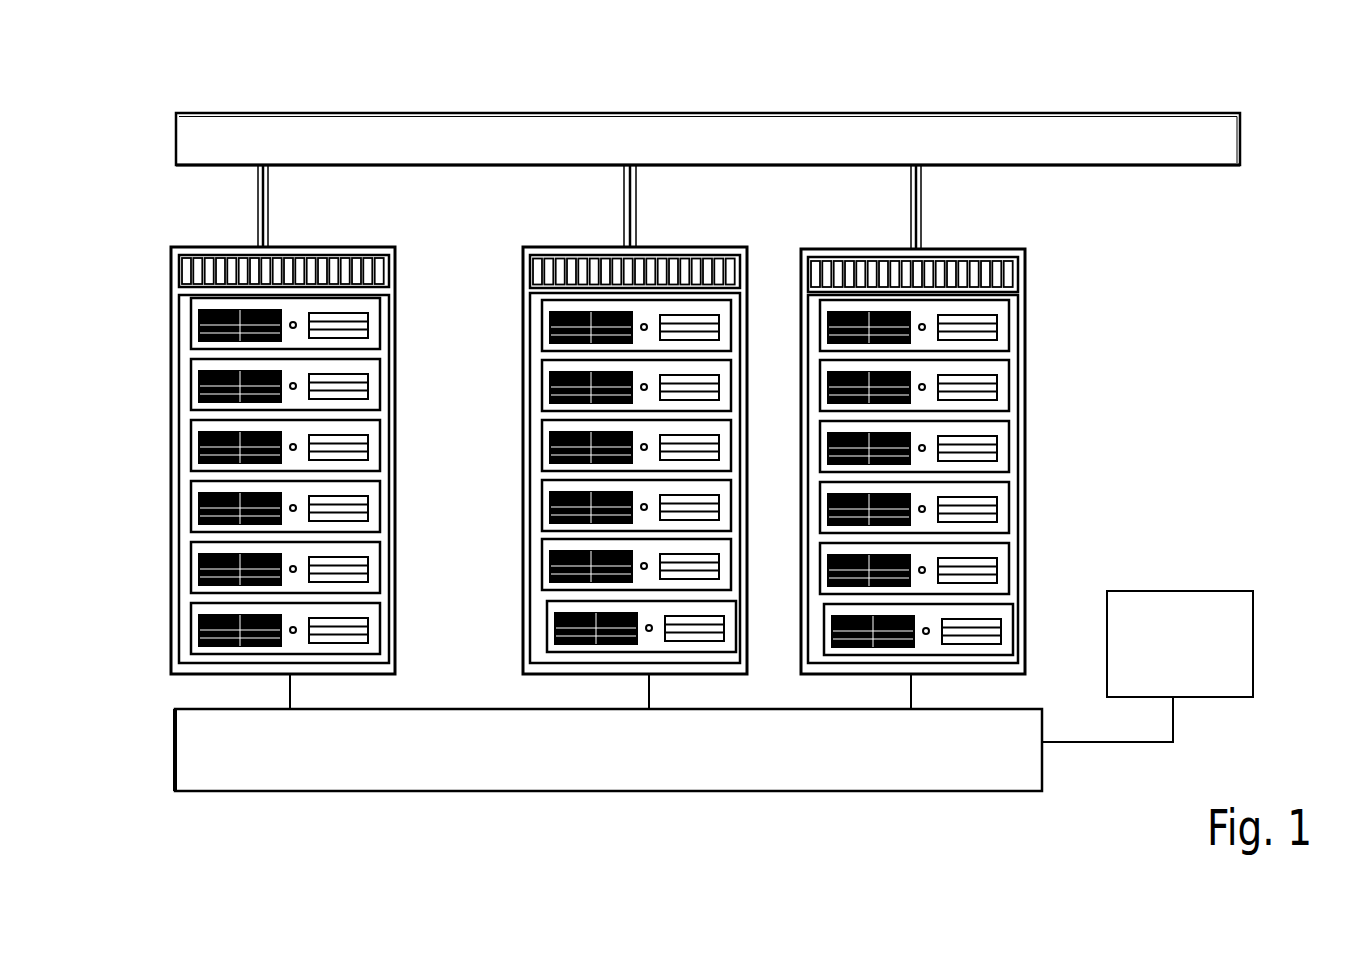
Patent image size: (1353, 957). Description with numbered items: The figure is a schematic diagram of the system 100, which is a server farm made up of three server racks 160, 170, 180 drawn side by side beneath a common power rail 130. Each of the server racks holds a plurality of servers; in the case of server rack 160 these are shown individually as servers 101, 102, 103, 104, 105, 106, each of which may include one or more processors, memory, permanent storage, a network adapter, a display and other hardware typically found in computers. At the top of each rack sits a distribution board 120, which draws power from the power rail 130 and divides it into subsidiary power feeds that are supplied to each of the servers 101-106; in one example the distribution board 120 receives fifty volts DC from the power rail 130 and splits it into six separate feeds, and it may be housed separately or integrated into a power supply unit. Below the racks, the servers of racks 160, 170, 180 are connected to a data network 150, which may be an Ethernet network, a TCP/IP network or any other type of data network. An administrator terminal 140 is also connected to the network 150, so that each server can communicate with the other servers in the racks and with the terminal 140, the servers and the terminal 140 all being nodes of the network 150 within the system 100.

The system 100 is at (1160, 260).
The server 101 is at (380, 323).
The server 102 is at (380, 384).
The server 103 is at (380, 445).
The server 104 is at (380, 506).
The server 105 is at (380, 567).
The server 106 is at (380, 628).
The distribution board 120 is at (389, 271).
The power rail 130 is at (242, 112).
The terminal 140 is at (1172, 591).
The network 150 is at (587, 791).
The server rack 160 is at (315, 445).
The server rack 170 is at (733, 247).
The server rack 180 is at (992, 249).